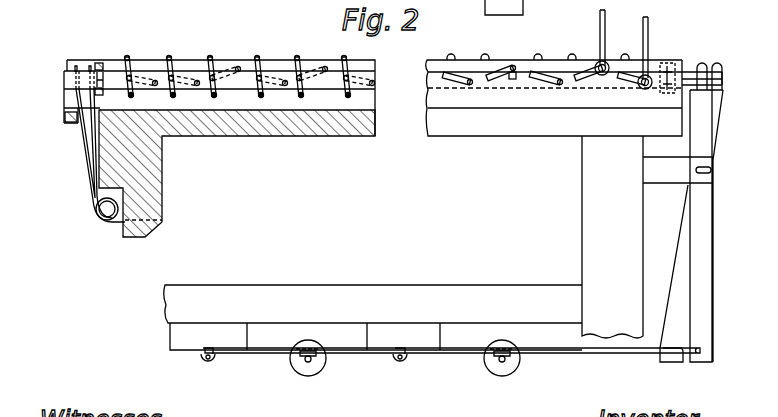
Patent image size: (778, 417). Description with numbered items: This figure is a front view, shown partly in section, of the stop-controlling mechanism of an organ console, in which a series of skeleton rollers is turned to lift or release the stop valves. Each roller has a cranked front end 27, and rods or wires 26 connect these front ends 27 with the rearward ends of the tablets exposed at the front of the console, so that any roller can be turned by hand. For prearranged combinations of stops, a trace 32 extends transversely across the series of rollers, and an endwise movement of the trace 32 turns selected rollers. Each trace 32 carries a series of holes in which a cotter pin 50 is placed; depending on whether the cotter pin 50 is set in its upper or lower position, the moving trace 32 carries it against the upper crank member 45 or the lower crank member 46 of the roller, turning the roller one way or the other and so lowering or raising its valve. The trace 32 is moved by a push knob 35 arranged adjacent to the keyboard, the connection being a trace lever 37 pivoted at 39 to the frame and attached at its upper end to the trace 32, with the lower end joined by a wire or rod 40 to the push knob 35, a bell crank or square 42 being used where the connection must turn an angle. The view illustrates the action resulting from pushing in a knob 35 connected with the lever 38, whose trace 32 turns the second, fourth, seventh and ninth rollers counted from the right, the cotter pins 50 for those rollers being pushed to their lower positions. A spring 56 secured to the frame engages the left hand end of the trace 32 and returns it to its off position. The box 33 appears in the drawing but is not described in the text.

The rods or wires 26 is at (644, 26).
The front ends of the rollers 27 is at (513, 68).
The trace 32 is at (64, 79).
The box 33 is at (523, 3).
The push knob or button 35 is at (322, 368).
The trace lever 37 is at (702, 302).
The lever 38 is at (678, 262).
The pivot 39 is at (712, 170).
The wire or rod 40 is at (605, 354).
The bell crank or square 42 is at (260, 357).
The upper crank member 45 is at (258, 57).
The lower crank member 46 is at (263, 95).
The cotter pin 50 is at (126, 57).
The spring 56 is at (88, 142).